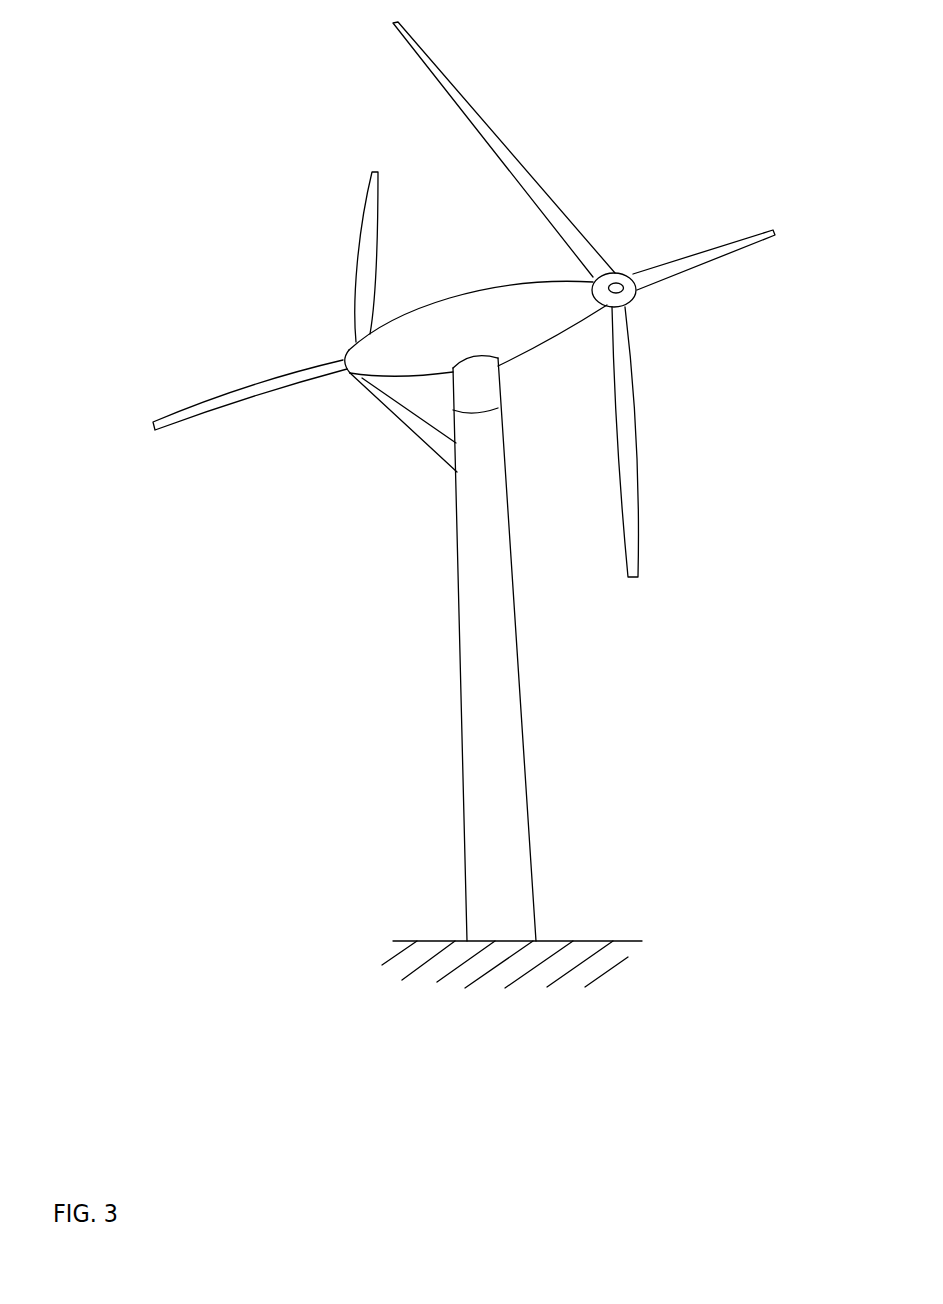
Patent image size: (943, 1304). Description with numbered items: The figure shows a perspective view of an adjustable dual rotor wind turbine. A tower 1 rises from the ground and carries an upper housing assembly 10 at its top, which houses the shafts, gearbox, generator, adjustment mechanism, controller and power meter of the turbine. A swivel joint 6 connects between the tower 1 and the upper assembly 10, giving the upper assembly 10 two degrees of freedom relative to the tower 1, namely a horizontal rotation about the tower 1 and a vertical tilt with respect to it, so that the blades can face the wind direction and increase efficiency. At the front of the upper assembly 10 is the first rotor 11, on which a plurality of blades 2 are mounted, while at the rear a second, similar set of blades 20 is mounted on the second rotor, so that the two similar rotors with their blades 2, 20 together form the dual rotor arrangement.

The tower 1 is at (464, 563).
The blades 2 is at (487, 130).
The swivel joint 6 is at (482, 390).
The upper housing assembly 10 is at (515, 290).
The first rotor 11 is at (630, 293).
The blades 20 is at (370, 255).